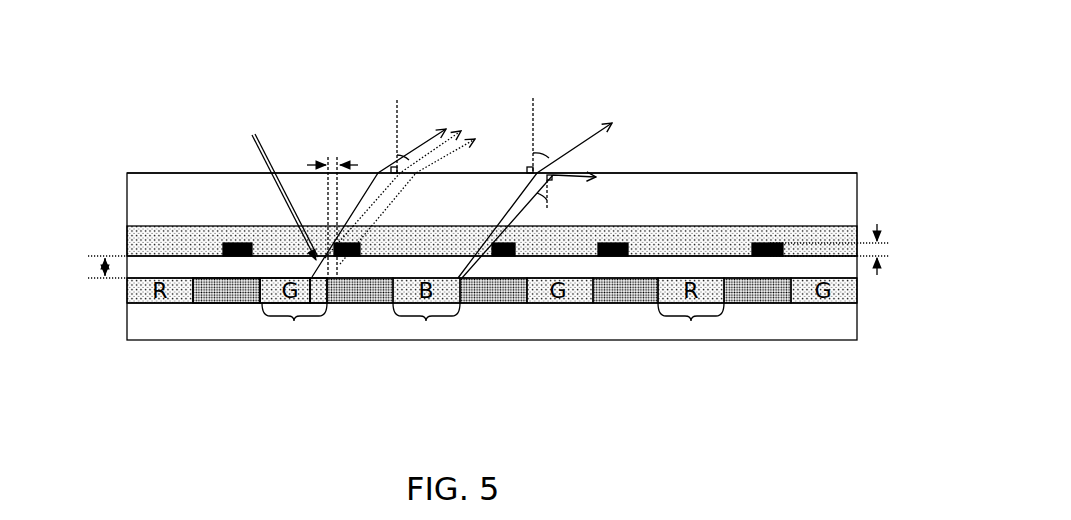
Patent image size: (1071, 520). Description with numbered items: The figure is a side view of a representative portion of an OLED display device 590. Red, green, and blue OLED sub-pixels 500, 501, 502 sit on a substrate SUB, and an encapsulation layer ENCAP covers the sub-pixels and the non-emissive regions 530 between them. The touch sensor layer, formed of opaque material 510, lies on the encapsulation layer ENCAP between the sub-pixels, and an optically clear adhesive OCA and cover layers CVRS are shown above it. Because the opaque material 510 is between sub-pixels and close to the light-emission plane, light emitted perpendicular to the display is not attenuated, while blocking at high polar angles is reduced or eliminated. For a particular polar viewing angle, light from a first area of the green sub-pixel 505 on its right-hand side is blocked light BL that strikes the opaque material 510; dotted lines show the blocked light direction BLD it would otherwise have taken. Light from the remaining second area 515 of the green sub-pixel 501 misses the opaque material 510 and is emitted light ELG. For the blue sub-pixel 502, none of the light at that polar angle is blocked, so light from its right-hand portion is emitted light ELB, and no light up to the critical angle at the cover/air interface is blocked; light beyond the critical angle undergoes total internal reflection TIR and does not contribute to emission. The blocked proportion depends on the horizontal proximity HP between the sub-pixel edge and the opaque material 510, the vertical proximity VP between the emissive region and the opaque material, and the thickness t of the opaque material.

The OLED display device 590 is at (136, 100).
The cover layers CVRS is at (845, 200).
The optically clear adhesive OCA is at (127, 237).
The opaque material 510 is at (623, 238).
The thickness of the opaque material t is at (837, 249).
The vertical proximity VP is at (459, 267).
The encapsulation layer ENCAP is at (143, 268).
The substrate SUB is at (840, 325).
The green sub-pixel 501 is at (292, 326).
The blue sub-pixel 502 is at (425, 326).
The red sub-pixel 500 is at (695, 326).
The non-emissive regions 530 is at (228, 290).
The second area of the sub-pixel 515 is at (326, 265).
The first area of a sub-pixel 505 is at (344, 257).
The blocked light BL is at (274, 185).
The horizontal proximity HP is at (331, 154).
The emitted light ELG is at (428, 134).
The blocked light direction BLD is at (468, 137).
The emitted light ELB is at (587, 125).
The total internal reflection TIR is at (599, 170).